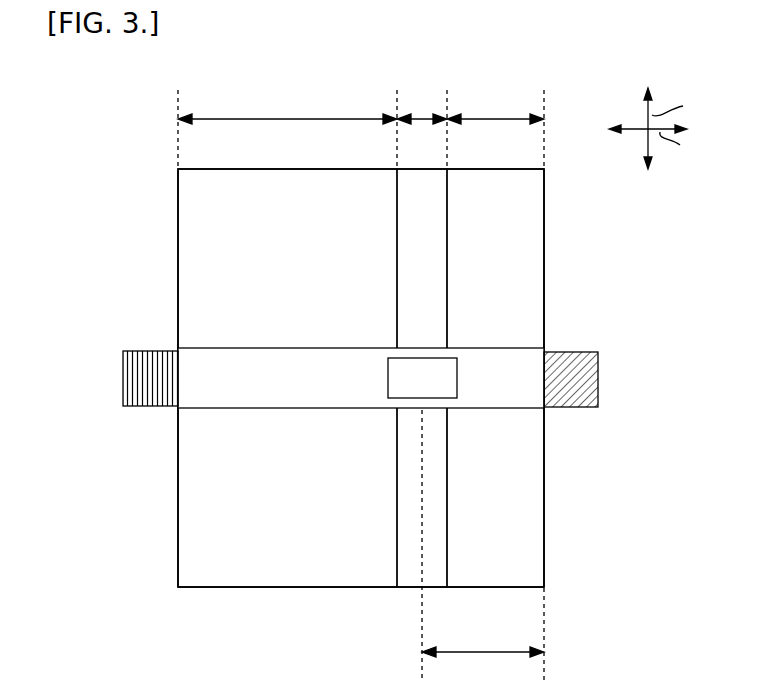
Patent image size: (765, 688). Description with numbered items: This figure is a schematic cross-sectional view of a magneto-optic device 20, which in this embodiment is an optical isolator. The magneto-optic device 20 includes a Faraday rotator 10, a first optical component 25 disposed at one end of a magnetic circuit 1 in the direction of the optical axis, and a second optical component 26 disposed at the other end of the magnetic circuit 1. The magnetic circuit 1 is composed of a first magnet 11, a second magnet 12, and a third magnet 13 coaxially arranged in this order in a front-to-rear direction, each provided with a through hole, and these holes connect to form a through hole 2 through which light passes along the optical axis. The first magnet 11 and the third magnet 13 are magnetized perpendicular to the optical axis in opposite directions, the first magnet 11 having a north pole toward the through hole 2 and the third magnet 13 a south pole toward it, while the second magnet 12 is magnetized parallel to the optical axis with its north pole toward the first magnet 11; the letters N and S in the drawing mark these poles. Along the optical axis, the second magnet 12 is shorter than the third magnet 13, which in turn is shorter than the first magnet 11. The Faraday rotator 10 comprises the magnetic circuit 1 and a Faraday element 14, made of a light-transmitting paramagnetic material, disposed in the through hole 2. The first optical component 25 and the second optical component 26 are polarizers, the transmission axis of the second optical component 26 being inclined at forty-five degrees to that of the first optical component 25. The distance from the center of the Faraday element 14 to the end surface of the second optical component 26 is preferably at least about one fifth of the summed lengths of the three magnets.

The magneto-optic device 20 is at (133, 137).
The magnetic circuit 1 is at (190, 594).
The Faraday rotator 10 is at (548, 231).
The first magnet 11 is at (288, 589).
The second magnet 12 is at (397, 500).
The third magnet 13 is at (495, 589).
The through hole 2 is at (206, 348).
The Faraday element 14 is at (457, 364).
The first optical component 25 is at (123, 382).
The second optical component 26 is at (600, 375).